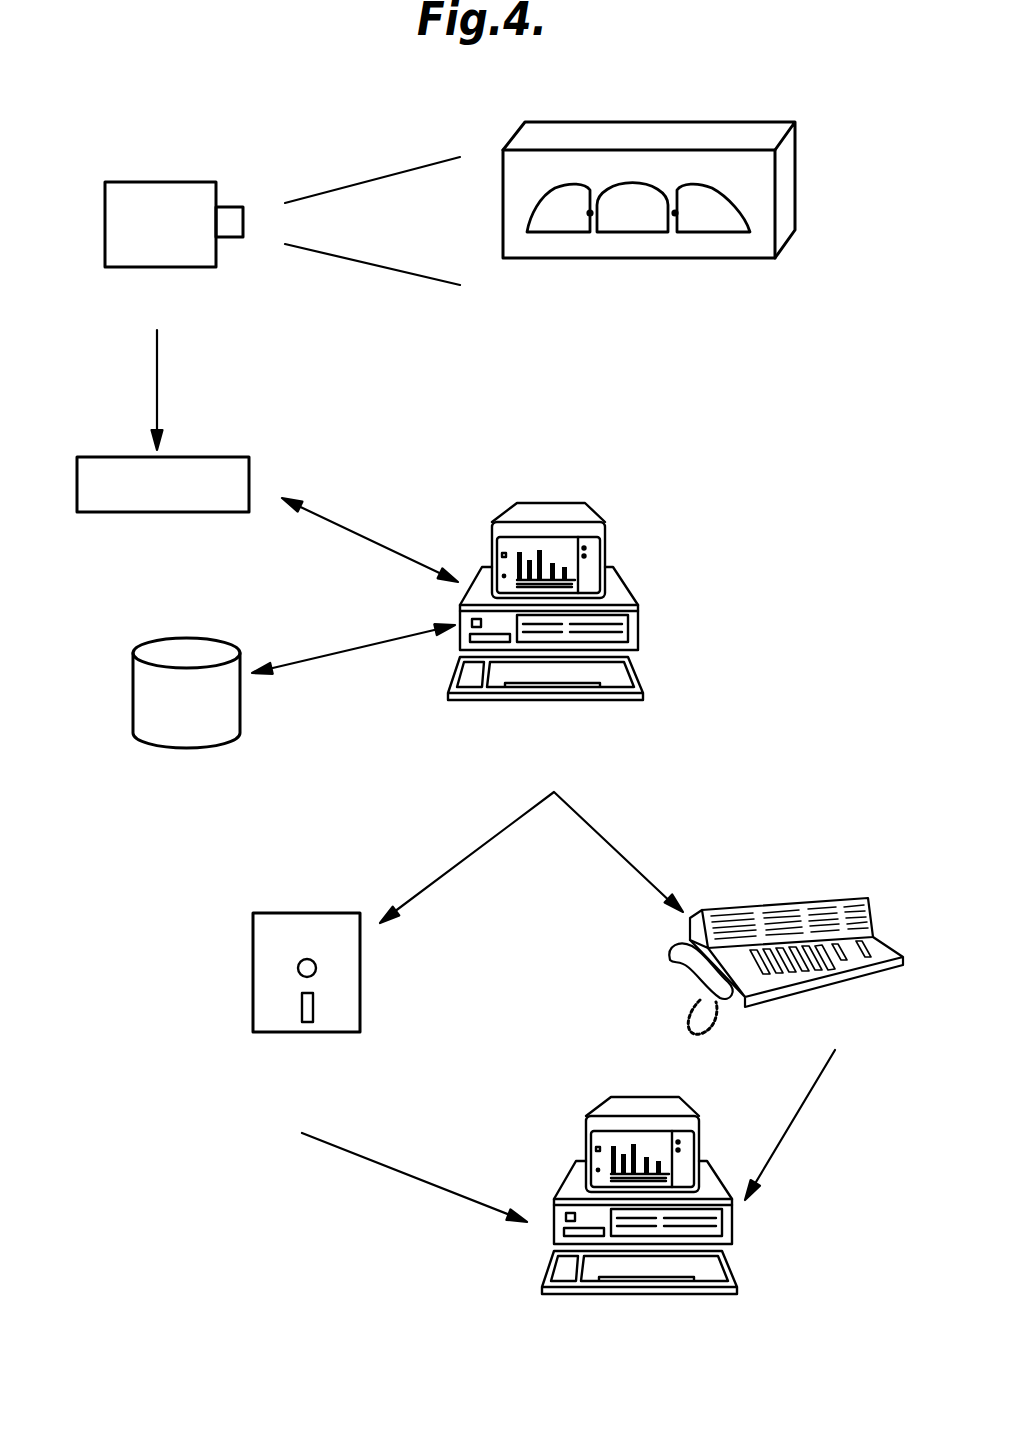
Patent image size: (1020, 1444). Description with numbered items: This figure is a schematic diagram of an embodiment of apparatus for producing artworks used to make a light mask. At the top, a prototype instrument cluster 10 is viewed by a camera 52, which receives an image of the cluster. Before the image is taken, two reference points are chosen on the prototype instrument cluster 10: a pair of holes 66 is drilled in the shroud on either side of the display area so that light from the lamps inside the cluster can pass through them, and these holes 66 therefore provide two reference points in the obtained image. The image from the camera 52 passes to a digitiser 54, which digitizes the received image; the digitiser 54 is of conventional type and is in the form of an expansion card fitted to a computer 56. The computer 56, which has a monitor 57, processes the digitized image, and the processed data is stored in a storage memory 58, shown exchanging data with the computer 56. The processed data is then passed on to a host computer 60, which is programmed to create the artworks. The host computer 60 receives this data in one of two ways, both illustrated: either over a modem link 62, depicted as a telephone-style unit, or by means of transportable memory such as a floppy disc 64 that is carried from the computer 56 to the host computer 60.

The prototype instrument cluster 10 is at (797, 160).
The holes 66 is at (675, 217).
The camera 52 is at (162, 195).
The digitiser 54 is at (115, 457).
The computer 56 is at (578, 586).
The monitor 57 is at (607, 532).
The storage memory 58 is at (153, 690).
The modem link 62 is at (860, 898).
The floppy disc 64 is at (270, 948).
The host computer 60 is at (735, 1224).